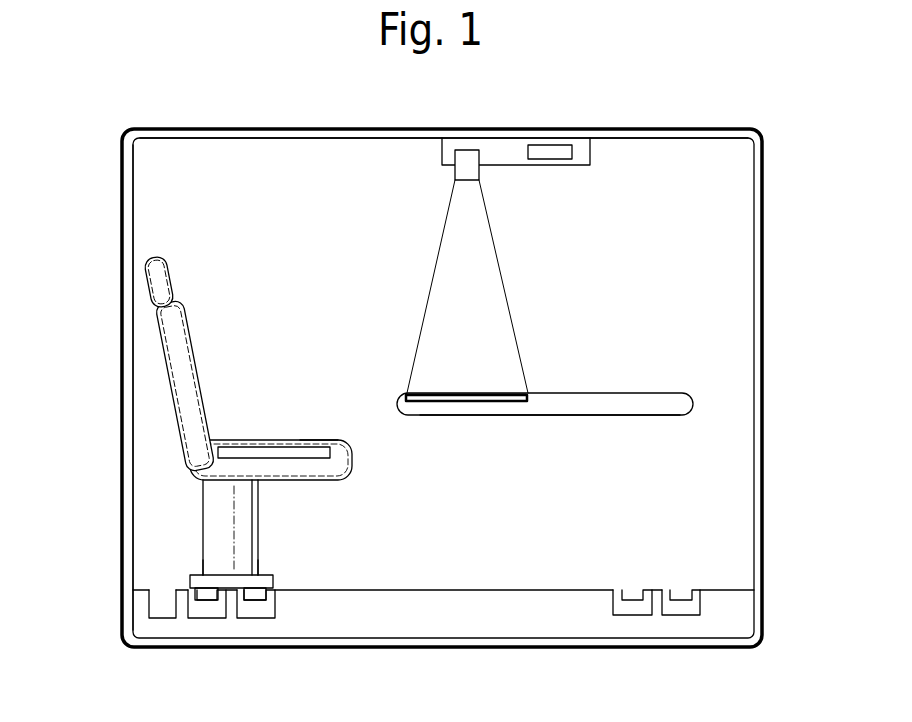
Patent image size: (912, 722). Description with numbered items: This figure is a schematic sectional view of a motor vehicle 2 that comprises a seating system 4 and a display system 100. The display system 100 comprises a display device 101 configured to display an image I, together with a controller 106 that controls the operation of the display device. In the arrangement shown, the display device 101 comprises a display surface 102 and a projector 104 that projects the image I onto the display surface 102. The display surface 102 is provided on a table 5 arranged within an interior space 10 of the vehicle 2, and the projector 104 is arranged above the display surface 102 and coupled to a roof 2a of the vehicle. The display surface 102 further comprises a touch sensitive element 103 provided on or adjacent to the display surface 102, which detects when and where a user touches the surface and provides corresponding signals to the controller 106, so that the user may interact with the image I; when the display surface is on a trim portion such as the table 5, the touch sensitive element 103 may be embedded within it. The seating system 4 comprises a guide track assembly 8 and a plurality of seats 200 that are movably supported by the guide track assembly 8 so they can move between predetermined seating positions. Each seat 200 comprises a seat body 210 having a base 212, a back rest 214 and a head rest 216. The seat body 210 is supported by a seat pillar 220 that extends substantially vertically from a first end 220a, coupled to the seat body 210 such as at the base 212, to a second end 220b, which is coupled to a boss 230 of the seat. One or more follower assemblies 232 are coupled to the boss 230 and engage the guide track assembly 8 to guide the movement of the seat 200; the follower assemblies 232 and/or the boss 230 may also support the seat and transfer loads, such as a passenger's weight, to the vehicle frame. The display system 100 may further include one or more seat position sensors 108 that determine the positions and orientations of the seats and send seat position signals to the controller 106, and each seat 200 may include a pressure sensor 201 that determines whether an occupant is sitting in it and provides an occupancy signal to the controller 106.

The motor vehicle 2 is at (780, 297).
The roof 2a is at (295, 138).
The seating system 4 is at (132, 366).
The table 5 is at (647, 408).
The guide track assembly 8 is at (300, 563).
The interior space 10 is at (446, 477).
The display system 100 is at (632, 170).
The display device 101 is at (713, 215).
The display surface 102 is at (610, 392).
The touch sensitive element 103 is at (513, 402).
The projector 104 is at (467, 158).
The controller 106 is at (548, 150).
The seat position sensor 108 is at (160, 610).
The seat 200 is at (228, 306).
The pressure sensor 201 is at (257, 452).
The seat body 210 is at (193, 477).
The base 212 is at (320, 440).
The back rest 214 is at (185, 407).
The head rest 216 is at (155, 267).
The seat pillar 220 is at (220, 533).
The first end of the seat pillar 220a is at (245, 483).
The second end of the seat pillar 220b is at (215, 572).
The boss 230 is at (267, 582).
The follower assembly 232 is at (208, 600).
The image I is at (463, 392).